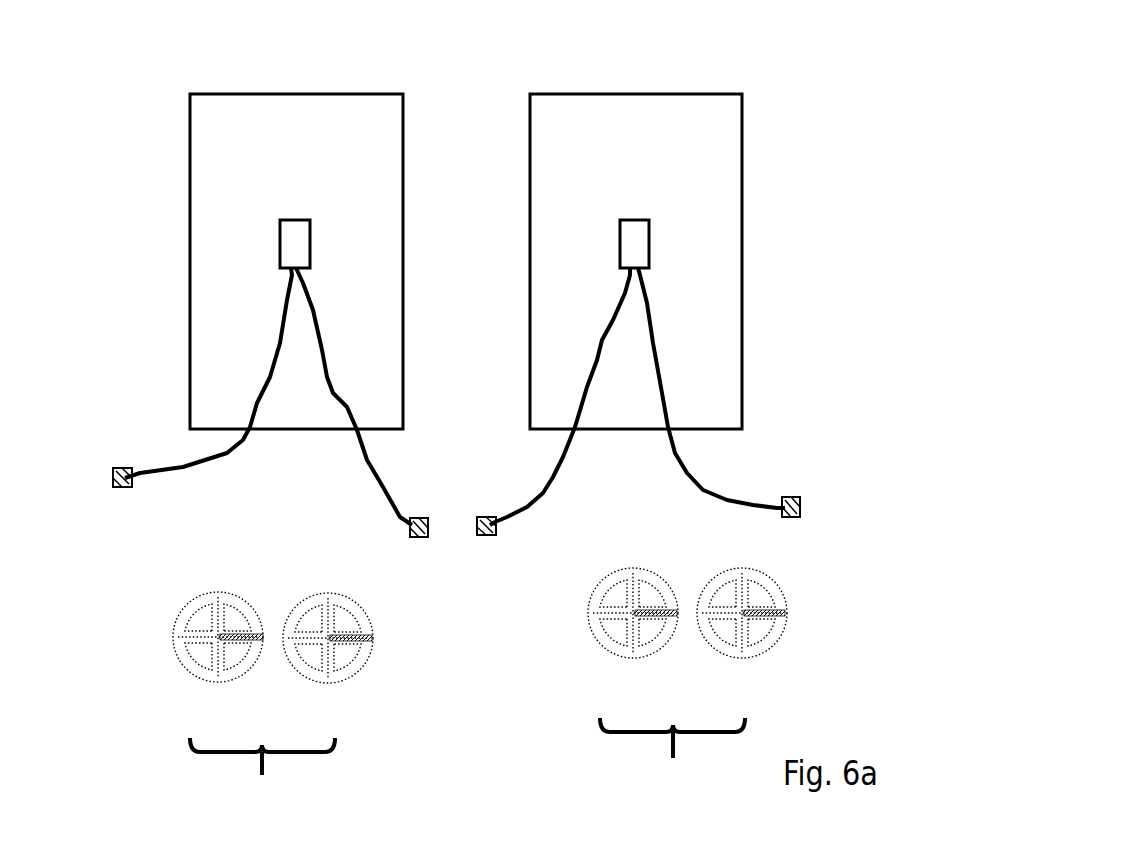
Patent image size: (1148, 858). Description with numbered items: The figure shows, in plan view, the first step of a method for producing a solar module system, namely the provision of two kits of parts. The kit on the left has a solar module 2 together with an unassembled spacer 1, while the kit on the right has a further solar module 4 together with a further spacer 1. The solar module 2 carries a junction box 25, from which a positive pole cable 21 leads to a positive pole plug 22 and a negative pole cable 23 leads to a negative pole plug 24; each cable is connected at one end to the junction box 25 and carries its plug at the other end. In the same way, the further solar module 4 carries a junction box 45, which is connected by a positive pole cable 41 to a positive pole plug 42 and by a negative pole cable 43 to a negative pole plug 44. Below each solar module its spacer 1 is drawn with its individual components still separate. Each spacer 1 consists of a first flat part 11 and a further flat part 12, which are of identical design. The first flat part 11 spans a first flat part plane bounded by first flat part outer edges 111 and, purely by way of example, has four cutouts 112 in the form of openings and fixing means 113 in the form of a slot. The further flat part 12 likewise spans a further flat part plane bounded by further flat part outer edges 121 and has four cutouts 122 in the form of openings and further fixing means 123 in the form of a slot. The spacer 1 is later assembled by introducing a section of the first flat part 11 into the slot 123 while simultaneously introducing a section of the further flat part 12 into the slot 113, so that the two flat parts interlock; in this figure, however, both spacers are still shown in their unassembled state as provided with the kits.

The spacer 1 is at (467, 765).
The first flat part 11 is at (237, 690).
The further flat part 12 is at (324, 694).
The first flat part outer edges 111 is at (177, 643).
The cutouts 112 is at (198, 612).
The fixing means 113 is at (247, 635).
The further flat part outer edges 121 is at (352, 675).
The cutouts 122 is at (345, 655).
The further fixing means 123 is at (370, 638).
The solar module 2 is at (297, 94).
The positive pole cable 21 is at (365, 440).
The positive pole plug 22 is at (417, 518).
The negative pole cable 23 is at (272, 383).
The negative pole plug 24 is at (122, 468).
The junction box 25 is at (280, 243).
The further solar module 4 is at (628, 94).
The positive pole cable 41 is at (675, 457).
The positive pole plug 42 is at (790, 497).
The negative pole cable 43 is at (567, 458).
The negative pole plug 44 is at (482, 517).
The junction box 45 is at (650, 235).